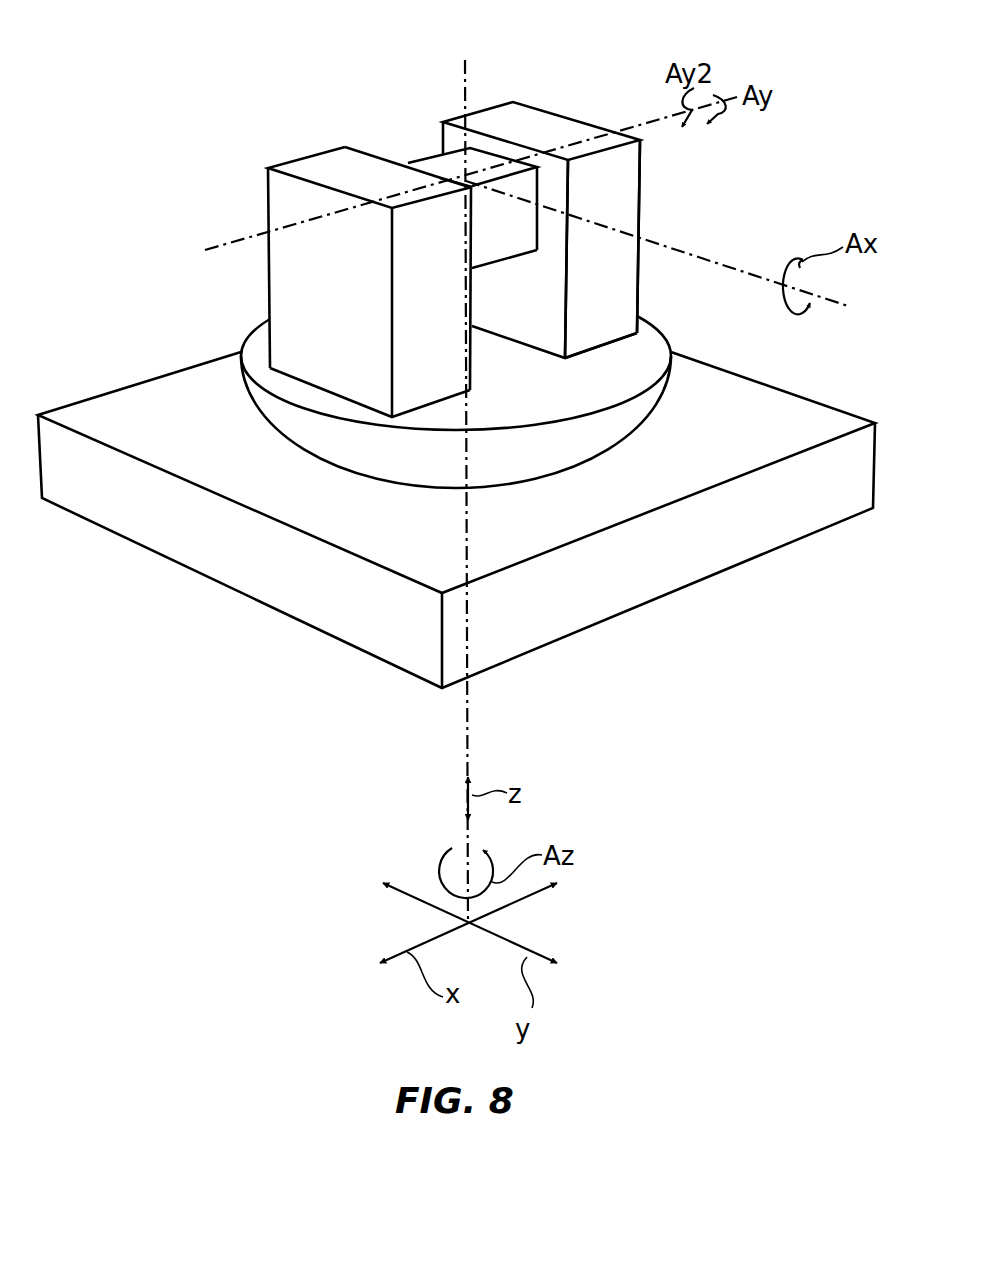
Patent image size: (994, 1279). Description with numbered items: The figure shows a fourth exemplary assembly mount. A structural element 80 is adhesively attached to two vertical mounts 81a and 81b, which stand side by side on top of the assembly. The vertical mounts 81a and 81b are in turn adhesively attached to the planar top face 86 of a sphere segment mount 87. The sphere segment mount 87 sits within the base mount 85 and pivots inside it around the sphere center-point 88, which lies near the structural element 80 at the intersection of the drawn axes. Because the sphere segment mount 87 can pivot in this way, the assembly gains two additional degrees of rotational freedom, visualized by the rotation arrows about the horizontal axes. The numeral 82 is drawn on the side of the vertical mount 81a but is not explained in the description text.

The head assembly 80 is at (427, 160).
The first block 81a is at (563, 125).
The second block 81b is at (317, 167).
The side face of block 82 is at (610, 207).
The base plate 85 is at (675, 568).
The dish rim 86 is at (658, 343).
The dish body 87 is at (330, 443).
The joint gap 88 is at (463, 177).